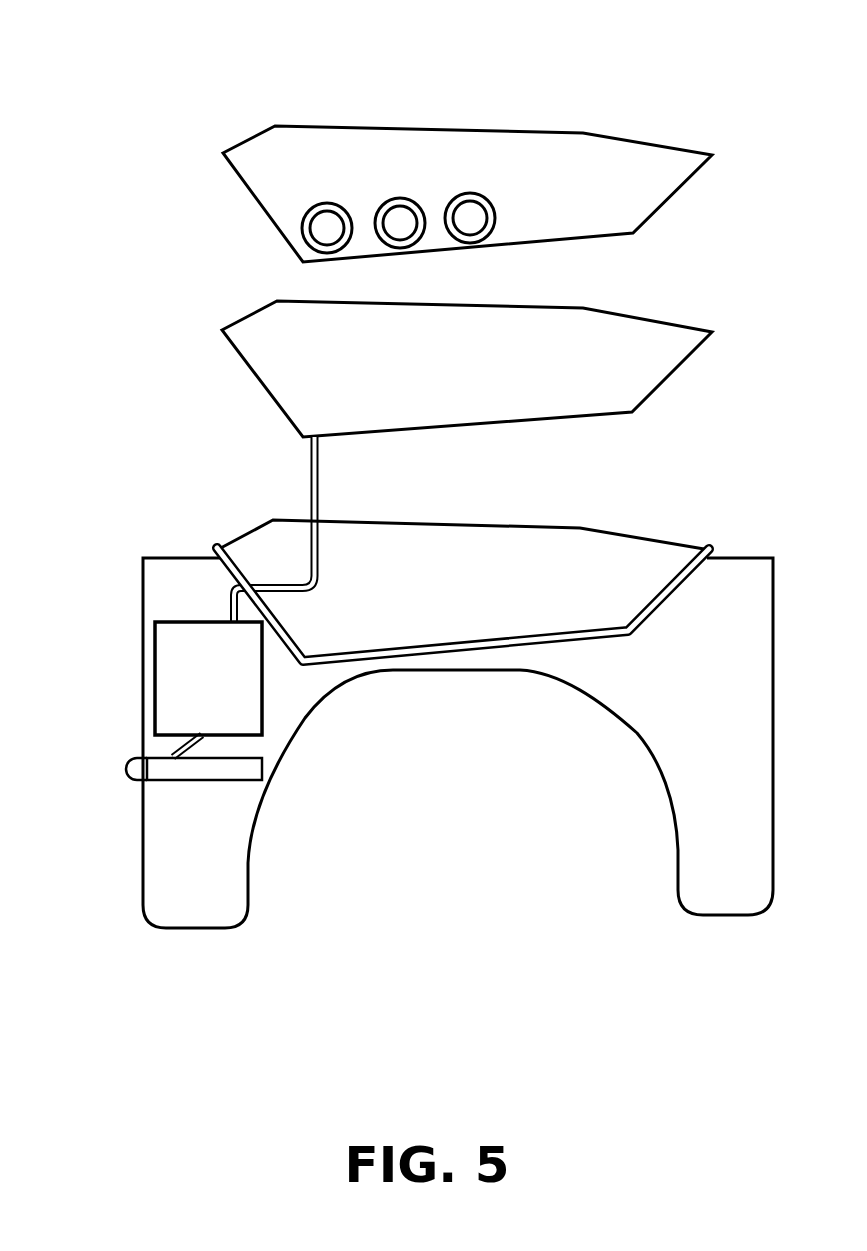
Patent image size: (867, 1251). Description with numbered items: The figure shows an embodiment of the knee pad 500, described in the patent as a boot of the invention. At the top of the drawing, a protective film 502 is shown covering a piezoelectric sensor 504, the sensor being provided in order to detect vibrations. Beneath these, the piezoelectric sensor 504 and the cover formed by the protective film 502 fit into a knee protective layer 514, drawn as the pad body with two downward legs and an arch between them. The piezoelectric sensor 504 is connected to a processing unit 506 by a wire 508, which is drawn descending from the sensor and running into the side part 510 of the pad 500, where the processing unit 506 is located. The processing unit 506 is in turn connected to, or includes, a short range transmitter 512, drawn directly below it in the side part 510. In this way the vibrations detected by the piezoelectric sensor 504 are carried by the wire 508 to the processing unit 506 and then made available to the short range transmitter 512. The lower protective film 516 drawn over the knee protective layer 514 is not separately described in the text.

The knee pad 500 is at (186, 372).
The protective film 502 is at (387, 170).
The piezoelectric sensor 504 is at (288, 348).
The processing unit 506 is at (208, 620).
The wire 508 is at (311, 462).
The side part 510 is at (118, 708).
The short range transmitter 512 is at (202, 783).
The knee protective layer 514 is at (593, 582).
The lower protective film 516 is at (463, 590).